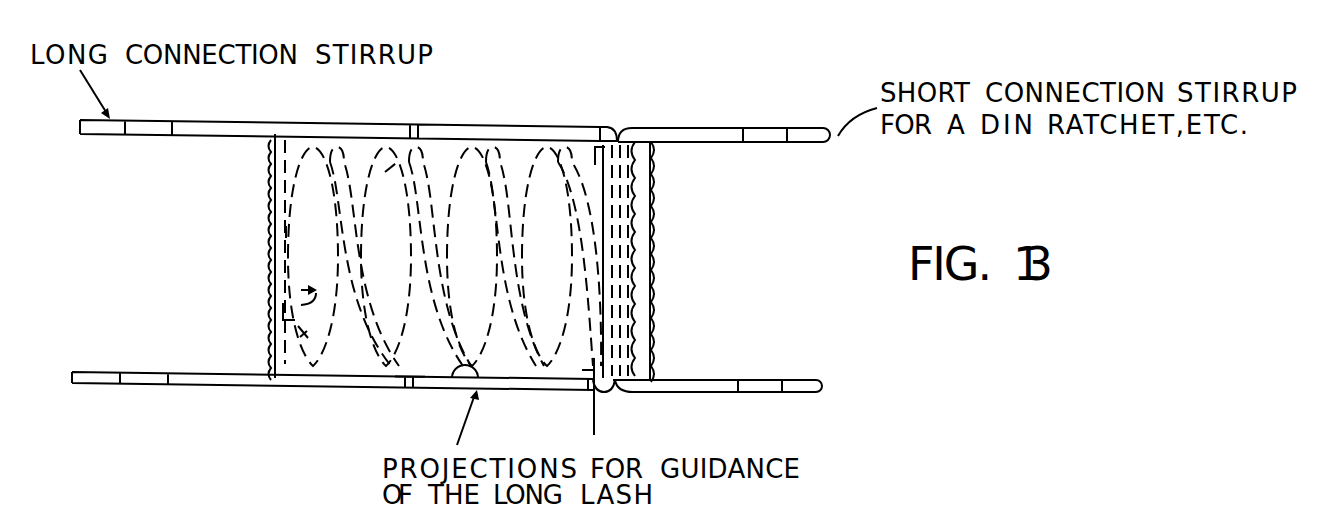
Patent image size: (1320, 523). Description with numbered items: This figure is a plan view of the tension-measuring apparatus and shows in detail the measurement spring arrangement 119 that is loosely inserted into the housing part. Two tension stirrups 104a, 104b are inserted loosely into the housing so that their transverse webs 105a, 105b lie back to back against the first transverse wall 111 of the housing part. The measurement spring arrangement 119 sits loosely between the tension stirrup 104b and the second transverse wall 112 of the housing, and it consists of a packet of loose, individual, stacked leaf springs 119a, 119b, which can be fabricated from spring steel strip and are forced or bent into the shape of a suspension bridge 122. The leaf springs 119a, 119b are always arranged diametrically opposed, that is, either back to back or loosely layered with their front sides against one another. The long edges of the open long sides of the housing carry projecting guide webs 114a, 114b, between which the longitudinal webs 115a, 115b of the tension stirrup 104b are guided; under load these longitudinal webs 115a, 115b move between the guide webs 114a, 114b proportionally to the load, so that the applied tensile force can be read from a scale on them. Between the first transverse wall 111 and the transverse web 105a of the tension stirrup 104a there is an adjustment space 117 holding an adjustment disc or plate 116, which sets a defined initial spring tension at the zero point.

The tension stirrup 104a is at (705, 121).
The tension stirrup 104b is at (214, 384).
The transverse web 105a is at (652, 172).
The transverse web 105b is at (632, 183).
The first transverse wall 111 is at (633, 245).
The second transverse wall 112 is at (270, 245).
The guide web 114a is at (540, 128).
The guide web 114b is at (527, 397).
The longitudinal web 115a is at (322, 123).
The longitudinal web 115b is at (342, 395).
The adjustment disc or plate 116 is at (643, 295).
The adjustment space 117 is at (652, 393).
The measurement spring arrangement 119 is at (490, 281).
The leaf spring 119a is at (283, 312).
The leaf spring 119b is at (331, 323).
The suspension bridge shape 122 is at (336, 243).